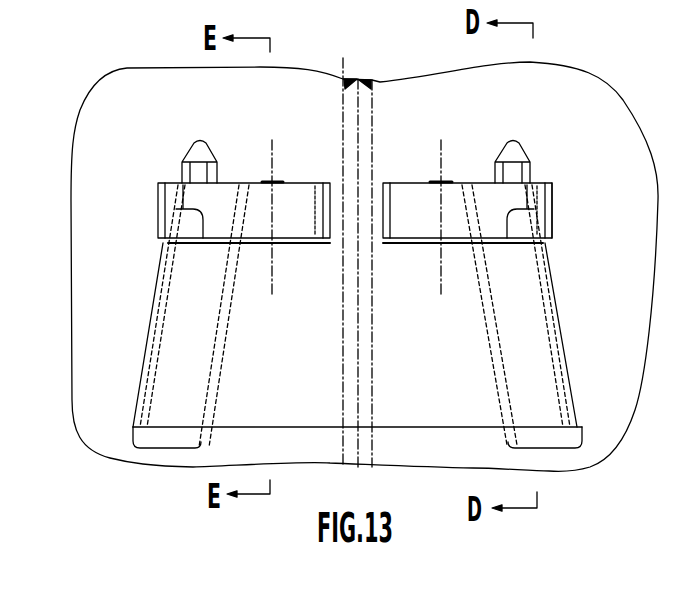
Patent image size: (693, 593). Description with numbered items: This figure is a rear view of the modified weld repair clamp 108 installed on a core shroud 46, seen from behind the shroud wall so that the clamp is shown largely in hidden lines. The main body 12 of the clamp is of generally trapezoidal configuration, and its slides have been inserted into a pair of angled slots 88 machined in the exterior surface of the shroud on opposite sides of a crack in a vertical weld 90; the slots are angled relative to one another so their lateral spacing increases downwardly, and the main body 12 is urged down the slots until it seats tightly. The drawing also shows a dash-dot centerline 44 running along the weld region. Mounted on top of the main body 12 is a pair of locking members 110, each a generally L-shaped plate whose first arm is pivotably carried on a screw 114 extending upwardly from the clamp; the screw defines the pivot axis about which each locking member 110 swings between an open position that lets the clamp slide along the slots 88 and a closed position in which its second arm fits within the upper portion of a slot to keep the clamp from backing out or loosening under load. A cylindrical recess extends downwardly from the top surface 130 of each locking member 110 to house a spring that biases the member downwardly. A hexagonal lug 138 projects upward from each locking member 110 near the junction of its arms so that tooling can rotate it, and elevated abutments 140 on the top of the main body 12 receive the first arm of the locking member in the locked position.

The main body 12 is at (138, 364).
The pipe 44 is at (344, 62).
The core shroud 46 is at (126, 295).
The angled slots 88 is at (178, 434).
The vertical weld 90 is at (383, 79).
The modified weld repair clamp 108 is at (122, 246).
The locking members 110 is at (598, 202).
The screw 114 is at (279, 178).
The top surface 130 is at (548, 183).
The lug 138 is at (195, 146).
The elevated abutment 140 is at (178, 210).